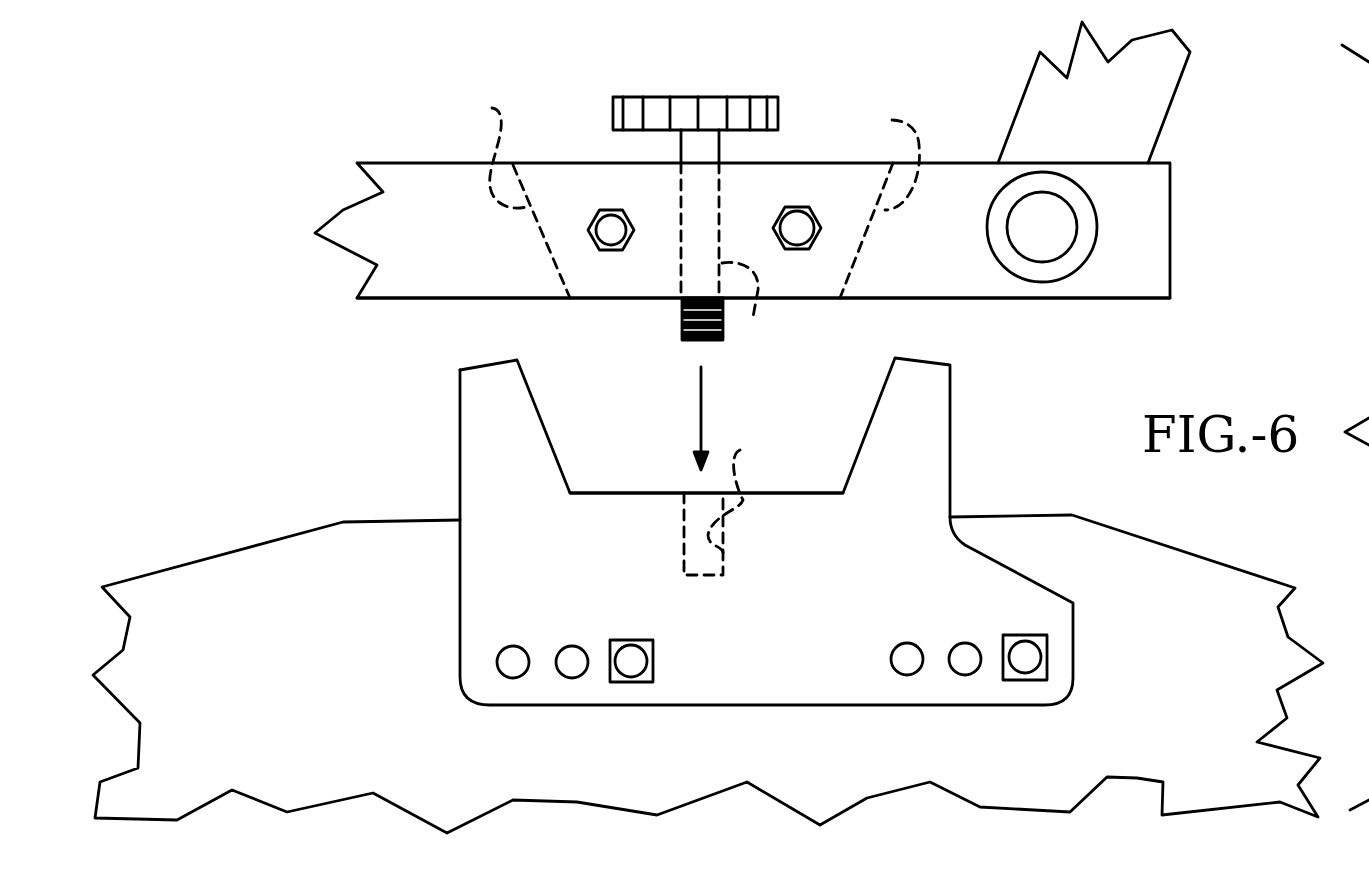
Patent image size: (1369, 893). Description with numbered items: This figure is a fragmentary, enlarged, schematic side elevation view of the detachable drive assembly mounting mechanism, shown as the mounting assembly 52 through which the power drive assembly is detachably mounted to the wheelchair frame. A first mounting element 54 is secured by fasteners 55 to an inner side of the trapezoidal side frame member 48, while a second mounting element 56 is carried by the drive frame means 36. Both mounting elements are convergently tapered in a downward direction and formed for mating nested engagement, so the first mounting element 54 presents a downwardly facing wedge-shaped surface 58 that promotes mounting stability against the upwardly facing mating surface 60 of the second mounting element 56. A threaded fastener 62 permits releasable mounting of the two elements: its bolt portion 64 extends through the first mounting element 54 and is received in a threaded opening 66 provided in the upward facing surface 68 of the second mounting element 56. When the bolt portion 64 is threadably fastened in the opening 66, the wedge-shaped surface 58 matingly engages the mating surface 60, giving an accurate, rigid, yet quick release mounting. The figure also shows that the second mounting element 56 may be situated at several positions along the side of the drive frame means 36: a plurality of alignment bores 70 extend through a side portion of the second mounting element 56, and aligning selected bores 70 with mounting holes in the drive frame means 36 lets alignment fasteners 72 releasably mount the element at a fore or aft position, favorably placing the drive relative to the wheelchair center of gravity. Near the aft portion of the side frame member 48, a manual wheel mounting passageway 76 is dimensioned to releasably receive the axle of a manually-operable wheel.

The drive frame means 36 is at (233, 544).
The side frame member 48 is at (421, 302).
The mounting assembly 52 is at (400, 128).
The first mounting element 54 is at (566, 160).
The fasteners 55 is at (797, 204).
The second mounting element 56 is at (455, 476).
The wedge-shaped surface 58 is at (490, 108).
The mating surface 60 is at (877, 397).
The threaded fastener 62 is at (689, 93).
The bolt portion 64 is at (724, 315).
The threaded opening 66 is at (740, 450).
The upward facing surface 68 is at (647, 493).
The alignment bores 70 is at (513, 678).
The alignment fasteners 72 is at (653, 645).
The manual wheel mounting passageway 76 is at (1078, 227).